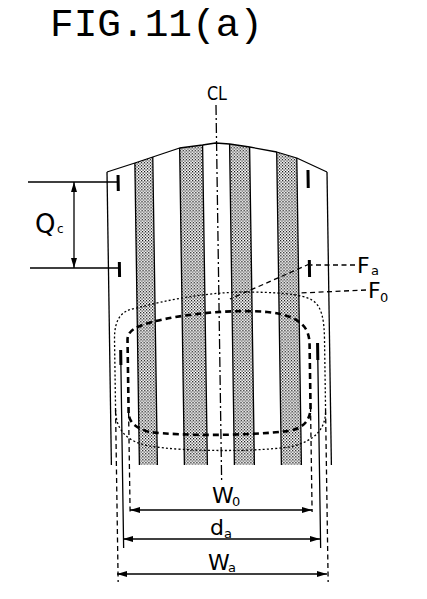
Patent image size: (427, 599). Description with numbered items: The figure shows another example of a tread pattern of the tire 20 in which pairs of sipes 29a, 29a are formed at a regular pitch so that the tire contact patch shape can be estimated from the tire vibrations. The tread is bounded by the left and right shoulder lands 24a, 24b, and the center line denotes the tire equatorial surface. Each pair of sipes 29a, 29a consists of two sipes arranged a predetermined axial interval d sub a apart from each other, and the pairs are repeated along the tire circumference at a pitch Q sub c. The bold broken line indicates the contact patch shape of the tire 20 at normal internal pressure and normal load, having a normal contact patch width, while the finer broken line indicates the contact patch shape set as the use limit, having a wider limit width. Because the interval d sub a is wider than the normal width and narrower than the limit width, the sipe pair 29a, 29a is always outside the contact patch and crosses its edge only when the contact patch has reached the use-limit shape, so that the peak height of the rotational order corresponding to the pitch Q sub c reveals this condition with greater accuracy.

The tire 20 is at (312, 148).
The left shoulder land 24a is at (107, 172).
The right shoulder land 24b is at (327, 172).
The sipe pair 29a is at (119, 174).